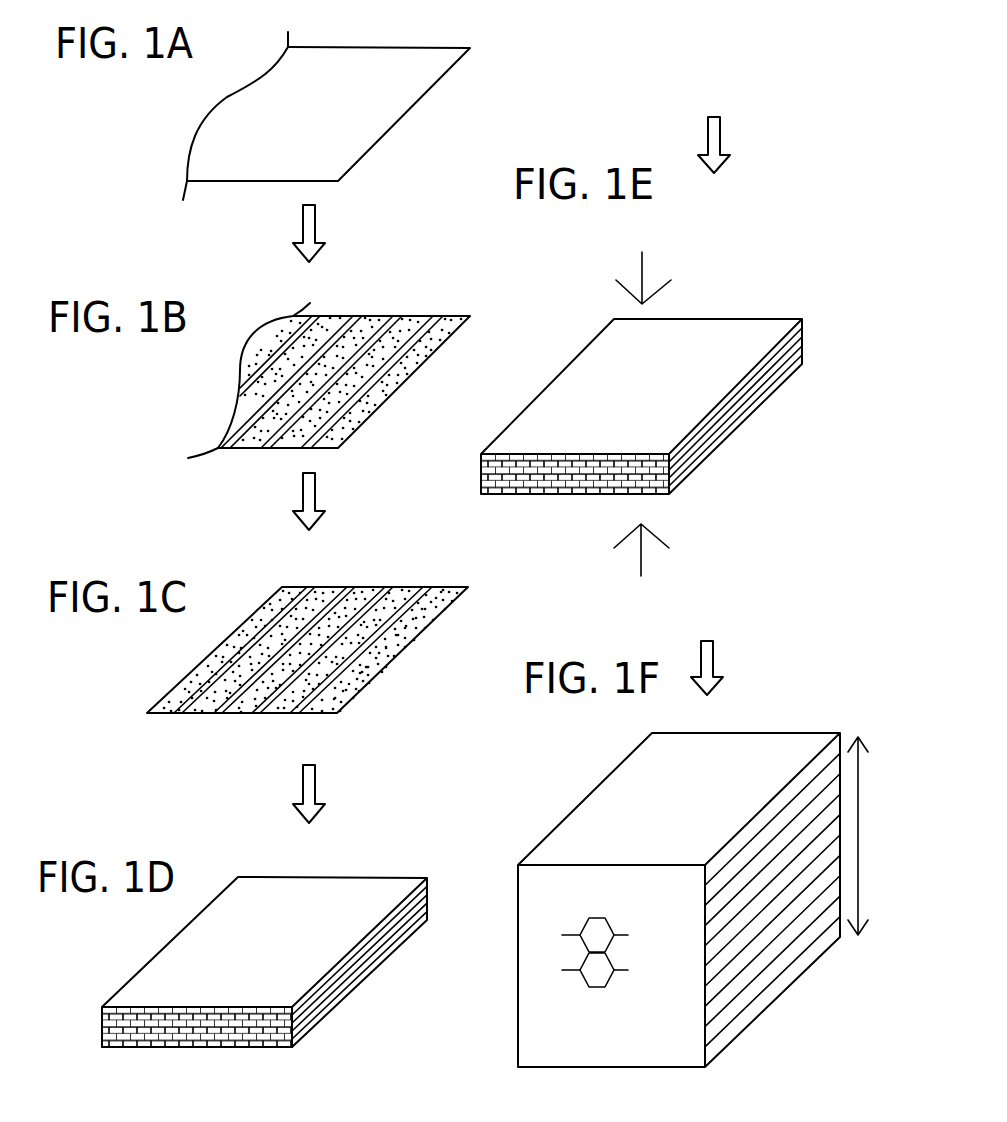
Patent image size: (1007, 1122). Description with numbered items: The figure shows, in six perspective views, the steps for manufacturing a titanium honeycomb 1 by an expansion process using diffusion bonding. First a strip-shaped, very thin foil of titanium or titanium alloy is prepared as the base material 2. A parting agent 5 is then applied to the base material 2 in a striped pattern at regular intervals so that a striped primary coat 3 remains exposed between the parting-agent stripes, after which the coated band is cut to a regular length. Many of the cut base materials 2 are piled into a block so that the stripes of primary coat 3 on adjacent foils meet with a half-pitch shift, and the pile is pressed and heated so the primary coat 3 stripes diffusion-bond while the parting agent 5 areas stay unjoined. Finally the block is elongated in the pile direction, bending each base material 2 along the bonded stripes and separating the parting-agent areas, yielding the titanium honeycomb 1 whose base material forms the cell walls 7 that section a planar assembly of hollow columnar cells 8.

In FIG. 1F, the titanium honeycomb 1 is at (800, 676).
In FIG. 1A, the base material 2 is at (400, 120).
In FIG. 1B, the base material 2 is at (432, 358).
In FIG. 1C, the base material 2 is at (410, 643).
In FIG. 1D, the base material 2 is at (427, 880).
In FIG. 1E, the base material 2 is at (802, 323).
In FIG. 1A, the primary coat 3 is at (247, 165).
In FIG. 1B, the primary coat 3 is at (317, 316).
In FIG. 1C, the primary coat 3 is at (311, 587).
In FIG. 1D, the primary coat 3 is at (110, 1047).
In FIG. 1B, the parting agent 5 is at (237, 448).
In FIG. 1C, the parting agent 5 is at (160, 713).
In FIG. 1D, the parting agent 5 is at (162, 1009).
In FIG. 1F, the cell wall 7 is at (612, 924).
In FIG. 1F, the hollow columnar cell 8 is at (591, 968).